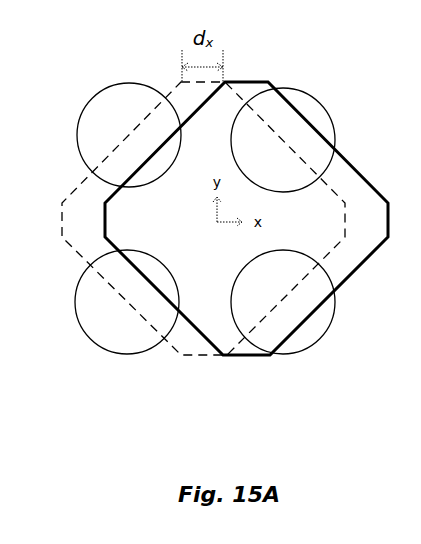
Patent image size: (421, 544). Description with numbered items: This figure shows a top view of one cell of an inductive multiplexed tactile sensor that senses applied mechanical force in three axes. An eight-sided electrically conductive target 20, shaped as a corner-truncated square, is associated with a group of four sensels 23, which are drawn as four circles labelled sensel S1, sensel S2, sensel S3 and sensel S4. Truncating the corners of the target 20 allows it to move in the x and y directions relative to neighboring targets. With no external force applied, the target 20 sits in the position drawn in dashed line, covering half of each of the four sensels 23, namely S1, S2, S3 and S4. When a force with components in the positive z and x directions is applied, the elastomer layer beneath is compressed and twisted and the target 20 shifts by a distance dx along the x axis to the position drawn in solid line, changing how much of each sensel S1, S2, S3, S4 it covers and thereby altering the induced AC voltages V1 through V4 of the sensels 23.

The electrically conductive target 20 is at (365, 172).
The sensels 23 is at (128, 337).
The sensel S1 is at (287, 137).
The sensel S2 is at (120, 135).
The sensel S3 is at (114, 302).
The sensel S4 is at (286, 304).